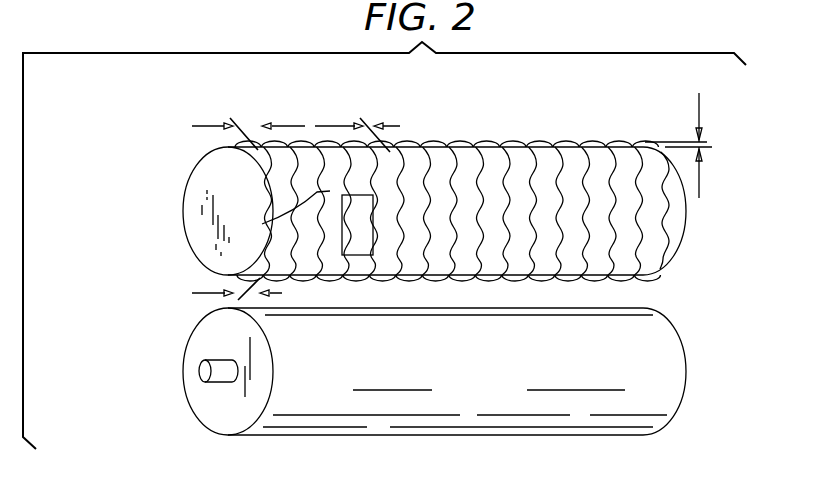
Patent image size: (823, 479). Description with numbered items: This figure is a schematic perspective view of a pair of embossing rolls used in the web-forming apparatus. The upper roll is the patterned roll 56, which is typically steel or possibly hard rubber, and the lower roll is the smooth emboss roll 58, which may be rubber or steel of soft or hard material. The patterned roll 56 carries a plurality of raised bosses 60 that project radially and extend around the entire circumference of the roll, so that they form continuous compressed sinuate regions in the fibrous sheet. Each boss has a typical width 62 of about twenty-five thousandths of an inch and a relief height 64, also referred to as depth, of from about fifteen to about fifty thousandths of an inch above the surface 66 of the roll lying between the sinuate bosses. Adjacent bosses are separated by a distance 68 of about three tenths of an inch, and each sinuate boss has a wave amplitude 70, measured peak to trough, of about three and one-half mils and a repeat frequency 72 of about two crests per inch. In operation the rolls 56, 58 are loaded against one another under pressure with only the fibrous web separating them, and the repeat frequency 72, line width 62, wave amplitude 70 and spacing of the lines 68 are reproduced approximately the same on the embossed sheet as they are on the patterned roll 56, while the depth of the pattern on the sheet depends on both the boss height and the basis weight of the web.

The patterned roll 56 is at (682, 237).
The smooth emboss roll 58 is at (687, 397).
The raised bosses 60 is at (265, 160).
The width 62 is at (400, 126).
The relief height 64 is at (712, 147).
The surface of the roll 66 is at (283, 217).
The distance 68 is at (191, 127).
The wave amplitude 70 is at (282, 293).
The repeat frequency 72 is at (377, 247).